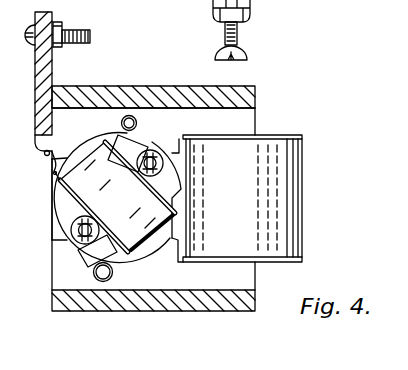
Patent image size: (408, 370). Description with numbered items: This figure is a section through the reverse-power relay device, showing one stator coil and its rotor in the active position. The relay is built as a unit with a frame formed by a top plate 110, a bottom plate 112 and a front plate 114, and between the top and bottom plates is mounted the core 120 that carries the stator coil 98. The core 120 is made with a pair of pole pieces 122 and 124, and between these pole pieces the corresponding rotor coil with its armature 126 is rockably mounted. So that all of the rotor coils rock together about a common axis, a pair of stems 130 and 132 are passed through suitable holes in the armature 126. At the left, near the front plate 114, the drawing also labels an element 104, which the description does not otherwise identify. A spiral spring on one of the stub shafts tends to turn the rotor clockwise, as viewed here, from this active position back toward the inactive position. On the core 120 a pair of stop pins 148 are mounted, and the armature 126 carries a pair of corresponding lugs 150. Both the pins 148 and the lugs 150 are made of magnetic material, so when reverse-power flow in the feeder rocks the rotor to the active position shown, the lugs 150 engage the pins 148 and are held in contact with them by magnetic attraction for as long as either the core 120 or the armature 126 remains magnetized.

The stator coil 98 is at (274, 195).
The pivot pin 104 is at (56, 176).
The top plate 110 is at (256, 87).
The bottom plate 112 is at (209, 304).
The front plate 114 is at (44, 73).
The core 120 is at (255, 135).
The pole piece 122 is at (70, 117).
The pole piece 124 is at (60, 266).
The armature 126 is at (170, 184).
The stem 130 is at (165, 166).
The stem 132 is at (70, 229).
The stop pin 148 is at (130, 115).
The lug 150 is at (150, 146).